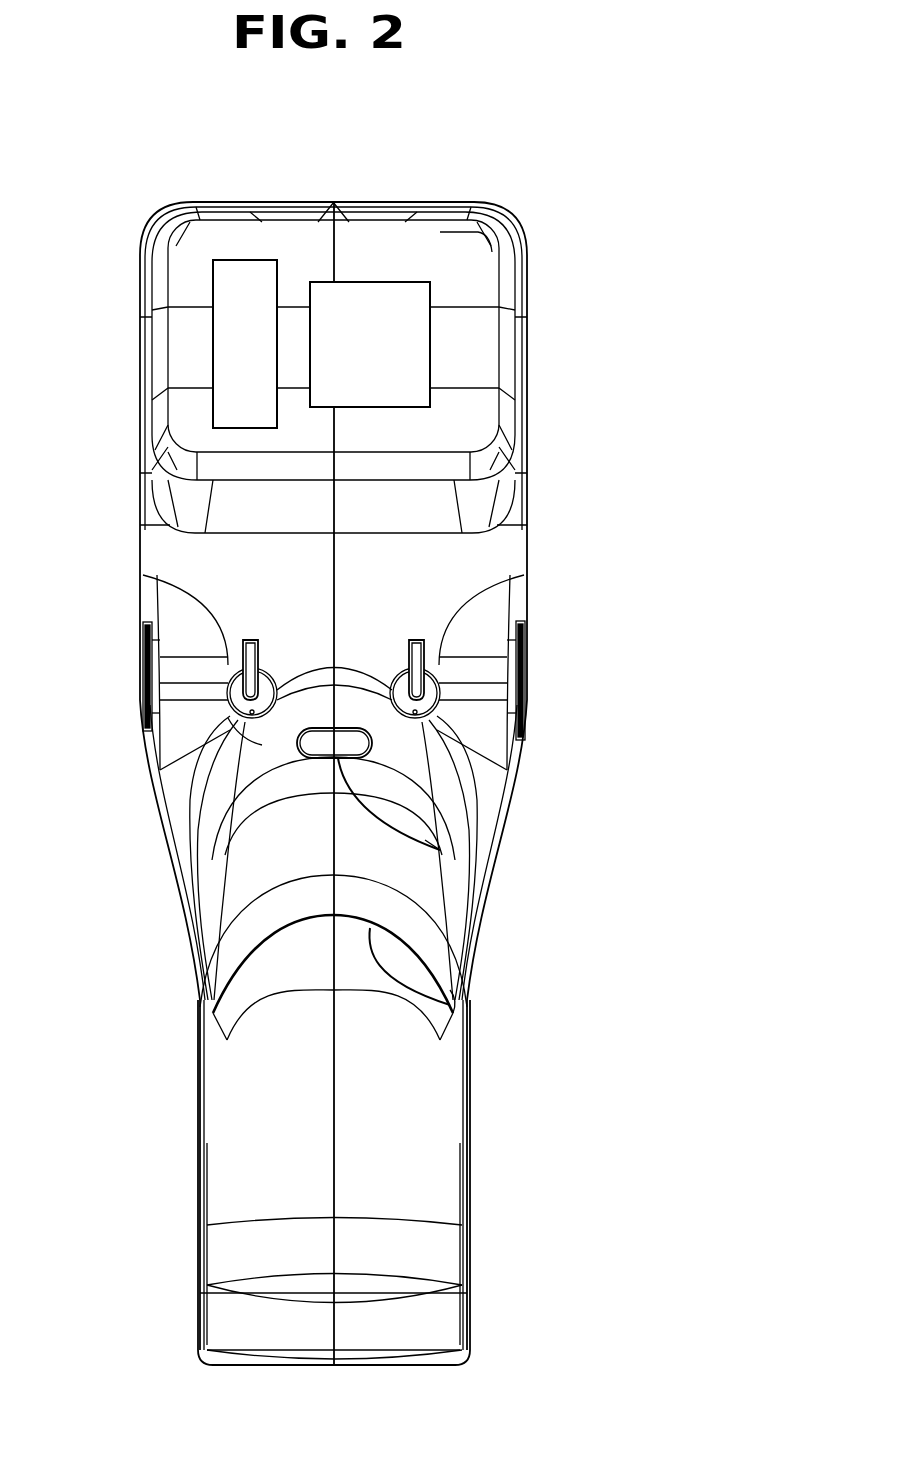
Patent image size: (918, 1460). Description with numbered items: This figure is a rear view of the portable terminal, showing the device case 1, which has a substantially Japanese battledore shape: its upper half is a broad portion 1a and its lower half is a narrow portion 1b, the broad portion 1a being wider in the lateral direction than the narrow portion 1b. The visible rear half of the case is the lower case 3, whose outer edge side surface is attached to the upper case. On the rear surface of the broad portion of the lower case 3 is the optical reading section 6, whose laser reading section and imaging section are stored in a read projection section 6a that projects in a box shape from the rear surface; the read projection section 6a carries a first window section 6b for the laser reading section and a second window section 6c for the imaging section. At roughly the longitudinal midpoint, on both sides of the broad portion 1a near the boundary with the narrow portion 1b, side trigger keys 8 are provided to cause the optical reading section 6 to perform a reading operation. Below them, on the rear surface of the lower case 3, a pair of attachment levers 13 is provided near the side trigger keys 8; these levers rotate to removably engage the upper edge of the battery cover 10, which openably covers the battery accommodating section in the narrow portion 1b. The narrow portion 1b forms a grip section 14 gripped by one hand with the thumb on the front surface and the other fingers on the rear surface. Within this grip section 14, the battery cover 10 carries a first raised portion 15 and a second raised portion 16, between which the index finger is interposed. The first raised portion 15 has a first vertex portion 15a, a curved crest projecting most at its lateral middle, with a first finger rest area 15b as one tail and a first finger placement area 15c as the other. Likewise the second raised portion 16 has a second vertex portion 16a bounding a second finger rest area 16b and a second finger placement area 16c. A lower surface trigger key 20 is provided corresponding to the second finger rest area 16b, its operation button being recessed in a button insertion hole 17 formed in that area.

The device case 1 is at (152, 233).
The broad portion 1a is at (530, 404).
The narrow portion 1b is at (197, 1153).
The lower case 3 is at (450, 560).
The optical reading section 6 is at (307, 235).
The read projection section 6a is at (475, 255).
The first window section 6b is at (387, 300).
The second window section 6c is at (243, 275).
The side trigger keys 8 is at (145, 670).
The battery cover 10 is at (422, 1118).
The attachment levers 13 is at (227, 680).
The grip section 14 is at (470, 953).
The first raised portion 15 is at (277, 930).
The first vertex portion 15a is at (377, 987).
The first finger rest area 15b is at (290, 882).
The first finger placement area 15c is at (293, 1040).
The second raised portion 16 is at (270, 780).
The second vertex portion 16a is at (390, 782).
The second finger rest area 16b is at (260, 740).
The second finger placement area 16c is at (280, 830).
The button insertion hole 17 is at (440, 848).
The lower surface trigger key 20 is at (362, 744).